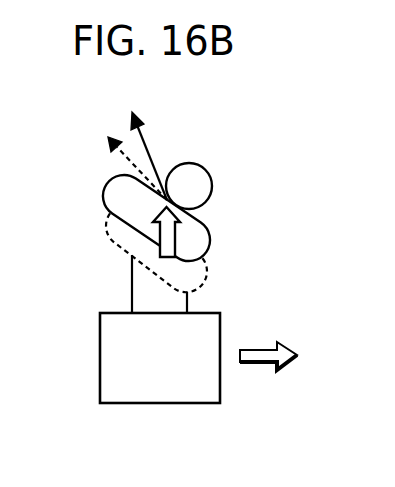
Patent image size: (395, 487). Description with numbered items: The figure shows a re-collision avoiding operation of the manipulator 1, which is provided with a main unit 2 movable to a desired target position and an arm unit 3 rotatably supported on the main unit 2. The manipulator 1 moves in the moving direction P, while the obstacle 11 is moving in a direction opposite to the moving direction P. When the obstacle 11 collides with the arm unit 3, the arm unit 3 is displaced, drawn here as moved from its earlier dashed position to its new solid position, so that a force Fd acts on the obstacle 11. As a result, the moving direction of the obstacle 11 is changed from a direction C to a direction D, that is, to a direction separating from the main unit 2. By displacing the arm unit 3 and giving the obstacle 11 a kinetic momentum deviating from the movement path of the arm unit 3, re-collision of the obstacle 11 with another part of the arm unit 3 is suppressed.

The manipulator 1 is at (257, 180).
The main unit 2 is at (158, 403).
The arm unit 3 is at (110, 184).
The obstacle 11 is at (189, 163).
The force Fd is at (175, 240).
The direction D is at (145, 140).
The direction C is at (128, 152).
The moving direction P is at (279, 357).